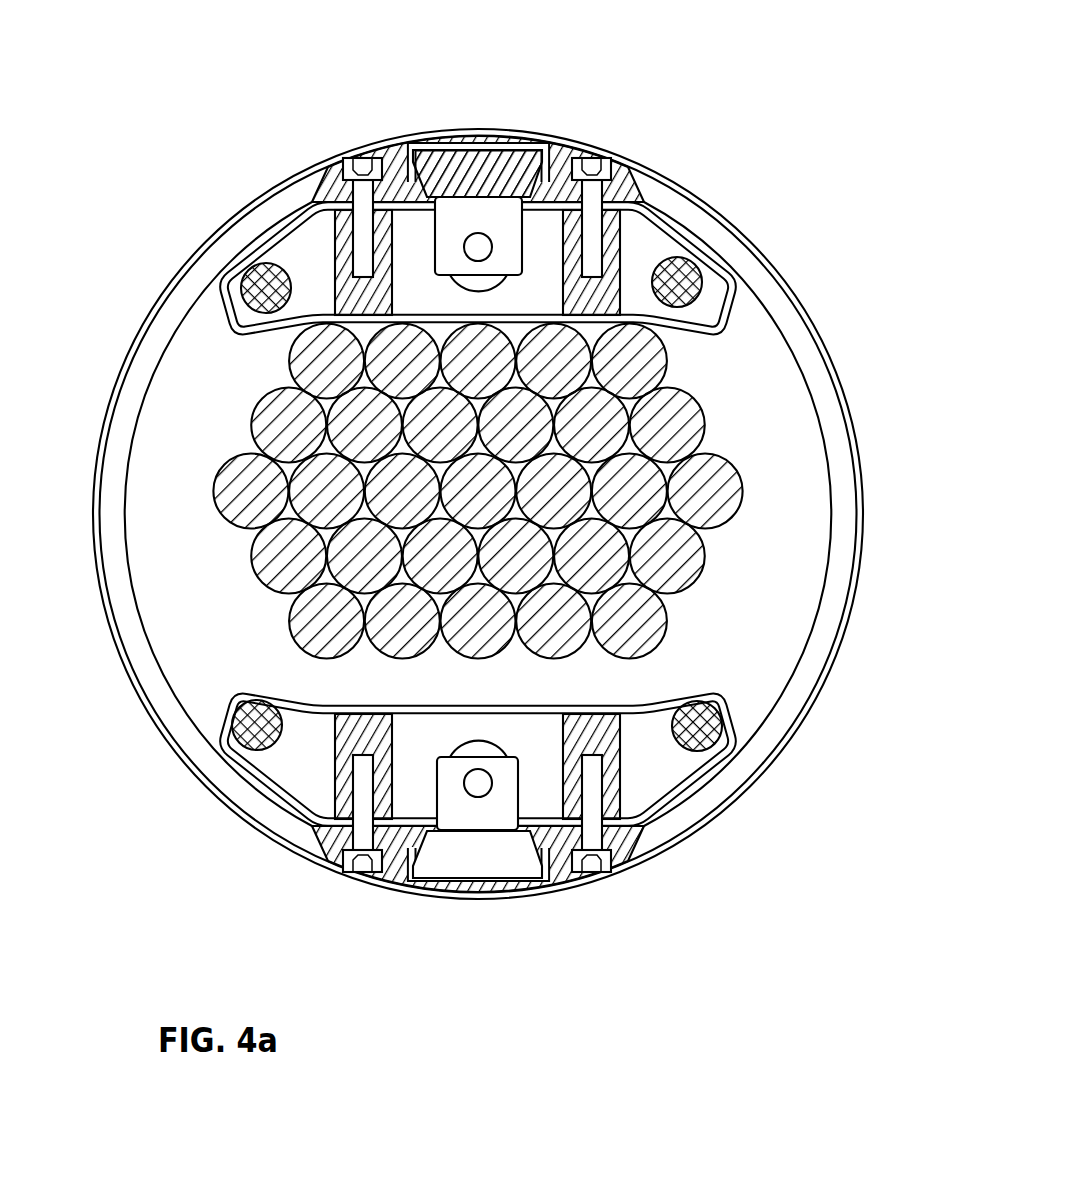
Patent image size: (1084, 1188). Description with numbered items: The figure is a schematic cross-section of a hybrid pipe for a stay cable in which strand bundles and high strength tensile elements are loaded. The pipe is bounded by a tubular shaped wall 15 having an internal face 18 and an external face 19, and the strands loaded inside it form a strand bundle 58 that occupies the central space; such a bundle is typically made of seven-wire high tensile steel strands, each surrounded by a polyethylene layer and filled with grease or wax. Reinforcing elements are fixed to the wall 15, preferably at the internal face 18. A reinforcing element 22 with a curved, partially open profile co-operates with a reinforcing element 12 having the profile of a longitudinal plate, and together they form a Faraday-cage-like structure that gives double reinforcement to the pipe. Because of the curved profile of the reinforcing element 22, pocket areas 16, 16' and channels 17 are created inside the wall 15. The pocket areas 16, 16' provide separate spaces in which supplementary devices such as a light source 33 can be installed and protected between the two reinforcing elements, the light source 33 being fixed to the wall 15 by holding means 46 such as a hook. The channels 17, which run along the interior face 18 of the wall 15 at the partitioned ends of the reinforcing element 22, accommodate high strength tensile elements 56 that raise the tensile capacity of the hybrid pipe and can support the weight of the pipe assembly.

The reinforcing element 12 is at (392, 147).
The tubular shaped wall 15 is at (708, 233).
The pocket area 16 is at (445, 152).
The pocket area 16' is at (506, 892).
The channel 17 is at (297, 783).
The internal face 18 is at (805, 655).
The external face 19 is at (863, 590).
The reinforcing element 22 is at (680, 331).
The light source 33 is at (487, 197).
The holding means 46 is at (477, 147).
The high strength tensile element 56 is at (252, 277).
The strand bundle 58 is at (247, 470).